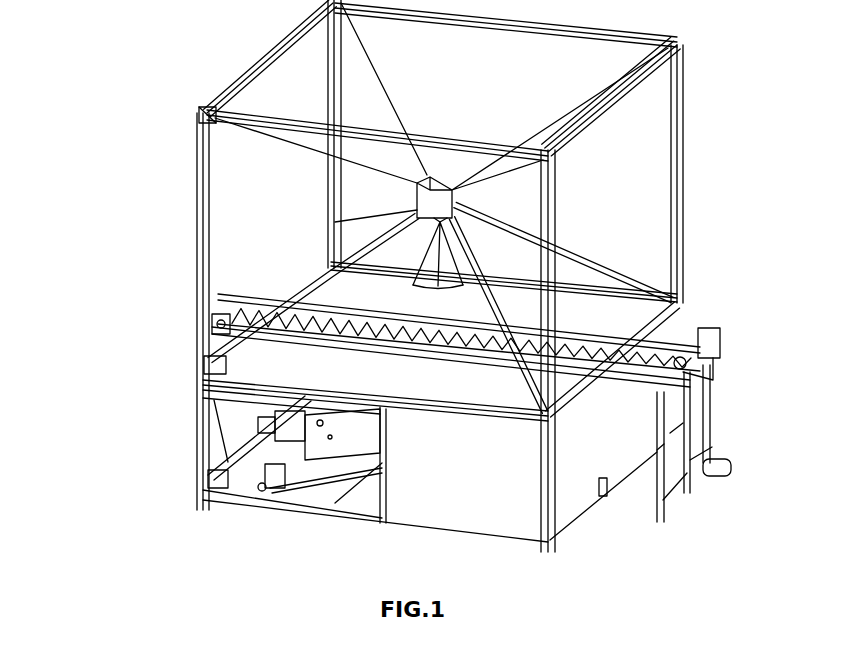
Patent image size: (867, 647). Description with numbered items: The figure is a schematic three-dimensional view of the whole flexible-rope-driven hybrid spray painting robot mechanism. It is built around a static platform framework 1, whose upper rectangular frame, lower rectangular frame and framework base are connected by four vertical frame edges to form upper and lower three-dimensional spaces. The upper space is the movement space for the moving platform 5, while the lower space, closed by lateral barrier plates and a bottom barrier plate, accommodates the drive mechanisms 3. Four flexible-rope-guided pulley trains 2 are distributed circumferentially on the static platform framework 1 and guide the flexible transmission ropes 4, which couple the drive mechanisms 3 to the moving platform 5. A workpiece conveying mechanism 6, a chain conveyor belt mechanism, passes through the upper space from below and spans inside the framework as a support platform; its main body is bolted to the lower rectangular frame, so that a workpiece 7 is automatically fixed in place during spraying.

The static platform framework 1 is at (278, 51).
The flexible-rope-guided pulley train 2 is at (207, 113).
The drive mechanism 3 is at (262, 459).
The flexible transmission rope 4 is at (417, 176).
The moving platform 5 is at (438, 221).
The workpiece conveying mechanism 6 is at (210, 340).
The workpiece 7 is at (405, 316).